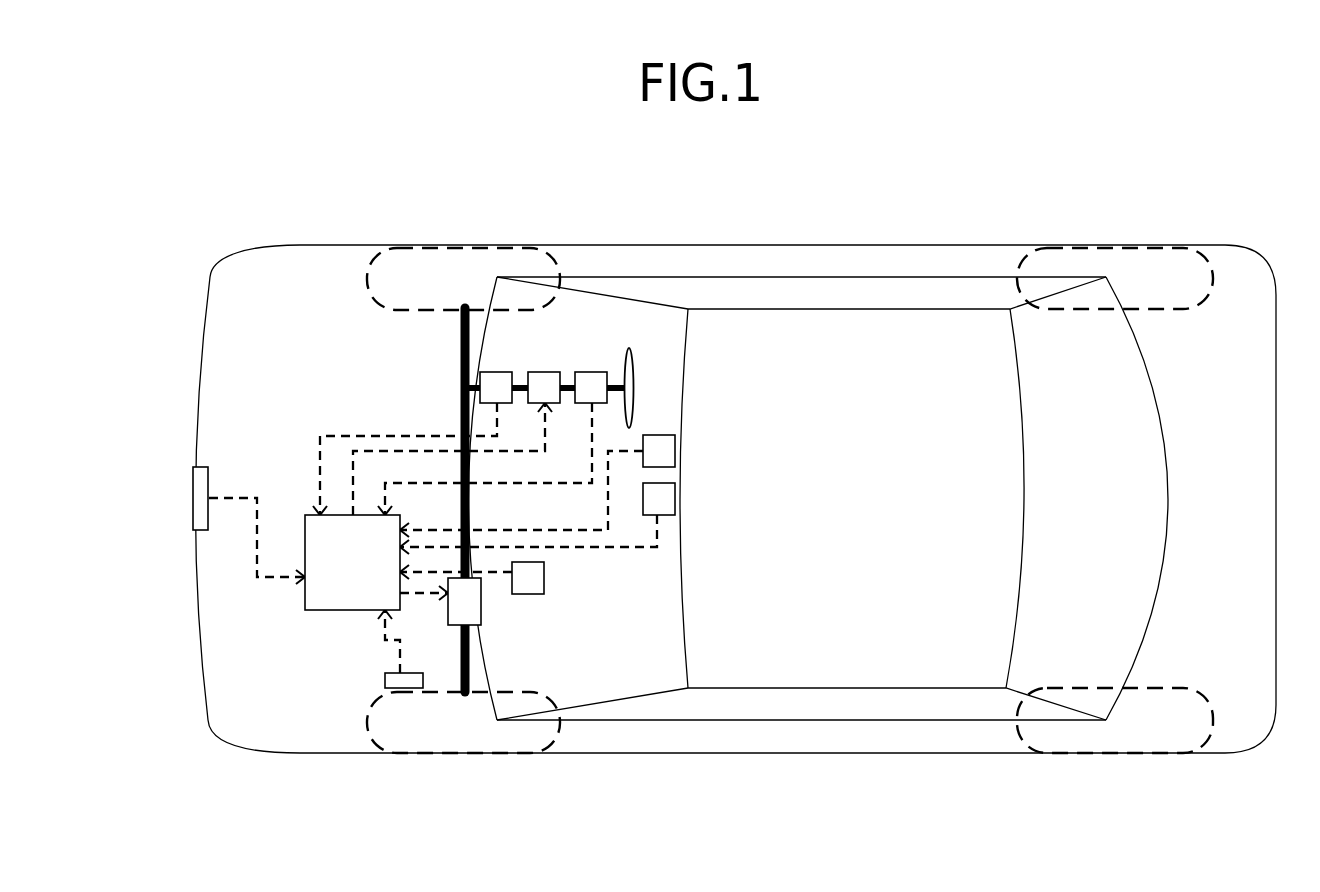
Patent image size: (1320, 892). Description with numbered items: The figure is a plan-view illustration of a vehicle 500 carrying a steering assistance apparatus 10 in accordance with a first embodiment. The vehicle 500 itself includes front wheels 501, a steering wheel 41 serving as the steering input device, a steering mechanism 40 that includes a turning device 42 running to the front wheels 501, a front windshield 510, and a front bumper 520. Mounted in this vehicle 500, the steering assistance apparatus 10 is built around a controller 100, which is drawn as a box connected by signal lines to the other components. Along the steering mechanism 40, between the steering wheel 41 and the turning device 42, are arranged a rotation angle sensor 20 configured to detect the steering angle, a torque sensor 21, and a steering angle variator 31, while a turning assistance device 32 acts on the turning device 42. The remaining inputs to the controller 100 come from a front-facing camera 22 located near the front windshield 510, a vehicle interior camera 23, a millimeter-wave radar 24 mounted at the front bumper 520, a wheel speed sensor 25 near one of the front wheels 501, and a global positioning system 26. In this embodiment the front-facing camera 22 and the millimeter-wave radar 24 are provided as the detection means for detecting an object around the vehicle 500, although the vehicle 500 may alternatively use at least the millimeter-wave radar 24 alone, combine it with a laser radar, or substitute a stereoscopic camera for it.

The vehicle 500 is at (817, 234).
The front wheels 501 is at (490, 243).
The front windshield 510 is at (670, 432).
The front bumper 520 is at (198, 348).
The steering assistance apparatus 10 is at (259, 661).
The controller 100 is at (352, 562).
The rotation angle sensor 20 is at (591, 387).
The torque sensor 21 is at (496, 387).
The steering angle variator 31 is at (544, 387).
The front-facing camera 22 is at (659, 451).
The vehicle interior camera 23 is at (659, 499).
The millimeter-wave radar 24 is at (203, 467).
The wheel speed sensor 25 is at (385, 673).
The global positioning system (GPS) 26 is at (528, 578).
The turning assistance device 32 is at (464, 601).
The steering mechanism 40 is at (545, 500).
The steering wheel 41 is at (655, 345).
The turning device 42 is at (462, 382).